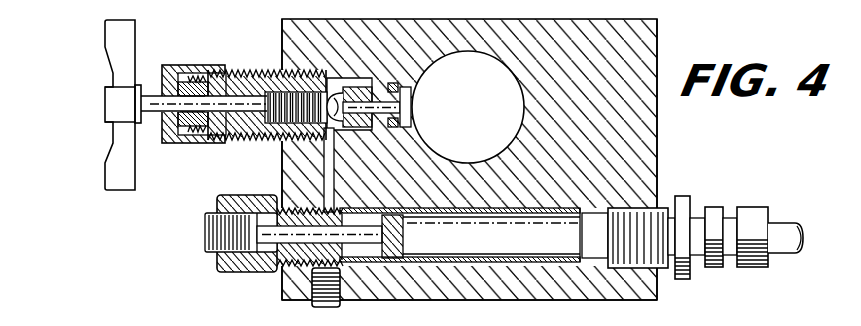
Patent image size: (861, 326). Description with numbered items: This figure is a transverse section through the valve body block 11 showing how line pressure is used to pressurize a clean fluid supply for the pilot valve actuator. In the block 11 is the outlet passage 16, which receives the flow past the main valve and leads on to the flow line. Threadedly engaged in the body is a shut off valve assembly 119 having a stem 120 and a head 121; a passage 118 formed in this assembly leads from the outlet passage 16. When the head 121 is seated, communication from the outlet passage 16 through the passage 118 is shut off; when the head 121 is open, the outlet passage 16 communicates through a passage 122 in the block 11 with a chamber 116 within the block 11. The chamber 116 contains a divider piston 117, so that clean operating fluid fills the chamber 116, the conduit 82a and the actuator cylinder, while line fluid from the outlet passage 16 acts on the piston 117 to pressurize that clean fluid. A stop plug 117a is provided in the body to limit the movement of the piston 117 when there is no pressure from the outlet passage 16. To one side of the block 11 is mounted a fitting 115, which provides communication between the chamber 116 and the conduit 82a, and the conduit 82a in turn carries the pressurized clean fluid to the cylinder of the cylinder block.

The central support block 11 is at (640, 169).
The outlet passage 16 is at (468, 107).
The conduit 82a is at (790, 233).
The fitting 115 is at (668, 218).
The chamber 116 is at (460, 235).
The divider piston 117 is at (400, 238).
The stop plug 117a is at (251, 264).
The passage 118 is at (400, 107).
The shut off valve assembly 119 is at (260, 150).
The stem 120 is at (247, 103).
The head 121 is at (335, 100).
The passage 122 is at (330, 178).